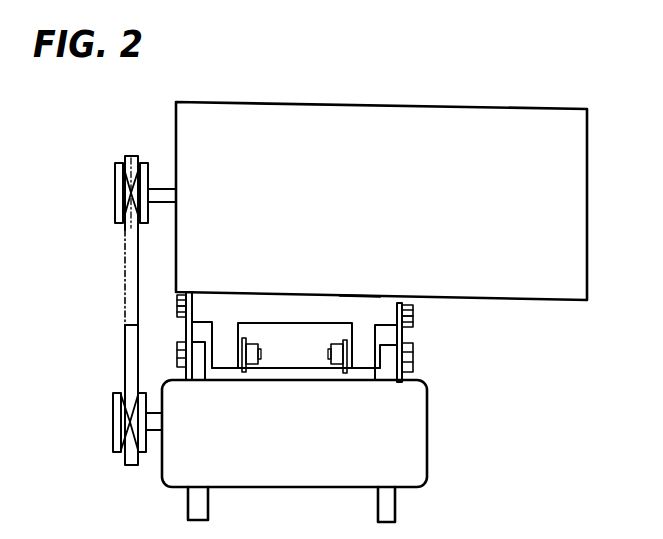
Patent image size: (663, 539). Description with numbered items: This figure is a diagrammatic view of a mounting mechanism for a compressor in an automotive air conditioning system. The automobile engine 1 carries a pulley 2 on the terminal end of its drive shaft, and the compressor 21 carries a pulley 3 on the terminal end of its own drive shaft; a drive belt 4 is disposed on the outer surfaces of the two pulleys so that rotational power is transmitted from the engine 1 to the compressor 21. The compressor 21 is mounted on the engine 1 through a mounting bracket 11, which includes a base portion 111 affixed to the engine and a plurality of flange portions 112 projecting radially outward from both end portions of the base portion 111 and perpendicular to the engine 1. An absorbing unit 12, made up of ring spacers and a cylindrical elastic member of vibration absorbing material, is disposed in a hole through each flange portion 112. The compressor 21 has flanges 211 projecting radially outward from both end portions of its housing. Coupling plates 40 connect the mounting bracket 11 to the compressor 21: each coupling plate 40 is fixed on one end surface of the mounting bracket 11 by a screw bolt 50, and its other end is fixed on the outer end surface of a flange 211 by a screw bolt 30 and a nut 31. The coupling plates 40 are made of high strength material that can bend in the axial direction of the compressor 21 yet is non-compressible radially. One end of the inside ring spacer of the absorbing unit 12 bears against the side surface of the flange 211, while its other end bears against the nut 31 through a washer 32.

The automobile engine 1 is at (475, 118).
The base portion 111 is at (360, 298).
The pulley 2 is at (118, 192).
The pulley 3 is at (113, 428).
The drive belt 4 is at (127, 356).
The mounting bracket 11 is at (390, 313).
The flange portions 112 is at (242, 328).
The absorbing unit 12 is at (244, 357).
The compressor 21 is at (345, 477).
The flanges 211 is at (183, 370).
The screw bolt 30 is at (182, 342).
The nut 31 is at (335, 367).
The washer 32 is at (250, 368).
The coupling plate 40 is at (187, 332).
The screw bolt 50 is at (180, 305).